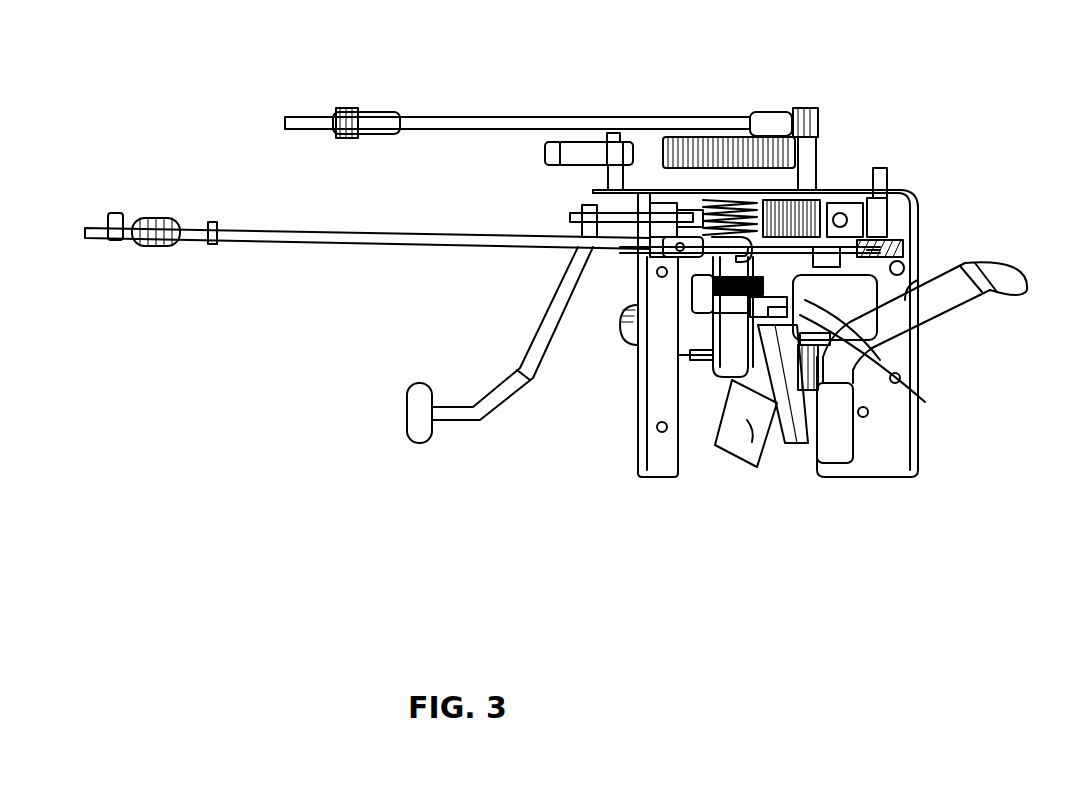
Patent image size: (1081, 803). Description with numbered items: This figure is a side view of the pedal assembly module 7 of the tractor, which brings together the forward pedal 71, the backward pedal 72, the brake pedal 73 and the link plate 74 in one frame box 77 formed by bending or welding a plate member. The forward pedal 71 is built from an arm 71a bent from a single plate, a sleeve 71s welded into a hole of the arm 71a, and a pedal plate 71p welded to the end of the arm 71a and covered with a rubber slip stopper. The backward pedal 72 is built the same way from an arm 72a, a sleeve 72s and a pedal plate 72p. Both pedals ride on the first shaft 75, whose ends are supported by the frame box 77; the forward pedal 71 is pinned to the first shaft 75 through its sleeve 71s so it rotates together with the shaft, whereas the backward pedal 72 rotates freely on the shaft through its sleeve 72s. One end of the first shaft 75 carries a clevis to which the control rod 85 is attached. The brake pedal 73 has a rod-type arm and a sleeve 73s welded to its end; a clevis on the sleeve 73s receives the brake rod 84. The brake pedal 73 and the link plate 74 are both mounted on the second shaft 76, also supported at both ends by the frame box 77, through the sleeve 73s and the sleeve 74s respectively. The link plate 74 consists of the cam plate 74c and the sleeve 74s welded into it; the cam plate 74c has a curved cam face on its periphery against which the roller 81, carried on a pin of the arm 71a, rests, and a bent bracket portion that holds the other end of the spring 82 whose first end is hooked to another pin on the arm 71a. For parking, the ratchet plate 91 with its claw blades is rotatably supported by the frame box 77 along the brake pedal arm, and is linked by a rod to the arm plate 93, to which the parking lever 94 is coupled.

The pedal assembly module 7 is at (1036, 68).
The forward pedal 71 is at (915, 250).
The arm 71a is at (827, 190).
The pedal plate 71p is at (958, 262).
The sleeve 71s is at (905, 245).
The backward pedal 72 is at (742, 472).
The arm 72a is at (793, 400).
The pedal plate 72p is at (755, 440).
The sleeve 72s is at (890, 395).
The brake pedal 73 is at (1030, 292).
The sleeve 73s is at (690, 265).
The link plate 74 is at (693, 313).
The cam plate 74c is at (680, 303).
The sleeve 74s is at (700, 360).
The first shaft 75 is at (838, 462).
The second shaft 76 is at (713, 420).
The frame box 77 is at (846, 190).
The roller 81 is at (880, 340).
The spring 82 is at (660, 465).
The brake rod 84 is at (400, 250).
The control rod 85 is at (581, 117).
The ratchet plate 91 is at (877, 232).
The arm plate 93 is at (600, 212).
The parking lever 94 is at (510, 393).